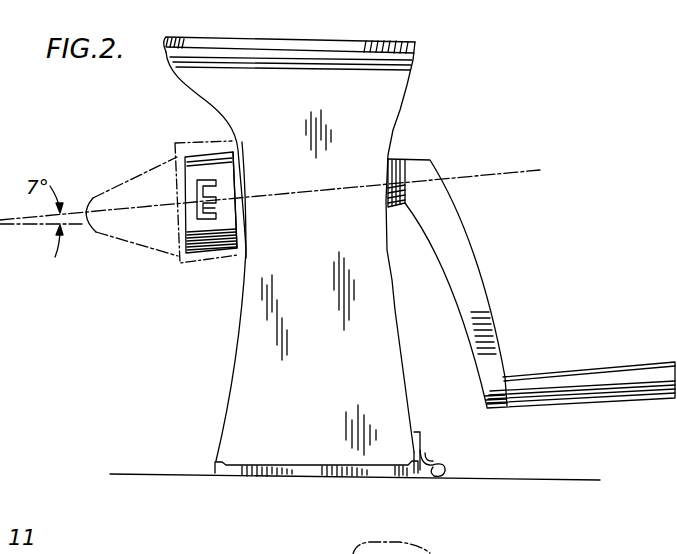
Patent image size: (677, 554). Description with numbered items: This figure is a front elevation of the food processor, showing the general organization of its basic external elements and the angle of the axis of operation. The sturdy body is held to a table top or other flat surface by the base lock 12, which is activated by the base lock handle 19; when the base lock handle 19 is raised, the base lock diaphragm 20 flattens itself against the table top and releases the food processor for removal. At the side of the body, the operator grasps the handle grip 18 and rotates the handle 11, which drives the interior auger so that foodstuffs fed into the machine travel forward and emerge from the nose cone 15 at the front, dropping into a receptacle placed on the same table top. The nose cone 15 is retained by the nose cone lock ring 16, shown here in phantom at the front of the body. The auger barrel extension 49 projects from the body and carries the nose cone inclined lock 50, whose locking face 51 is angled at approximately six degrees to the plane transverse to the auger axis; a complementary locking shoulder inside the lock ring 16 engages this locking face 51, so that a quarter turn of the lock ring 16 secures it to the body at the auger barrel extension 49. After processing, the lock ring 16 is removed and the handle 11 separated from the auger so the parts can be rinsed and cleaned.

The handle 11 is at (466, 250).
The base lock 12 is at (456, 455).
The nose cone 15 is at (115, 179).
The nose cone lock ring 16 is at (200, 110).
The handle grip 18 is at (567, 385).
The base lock handle 19 is at (424, 446).
The base lock diaphragm 20 is at (299, 477).
The auger barrel extension 49 is at (209, 245).
The nose cone inclined lock 50 is at (219, 193).
The locking face 51 is at (222, 214).